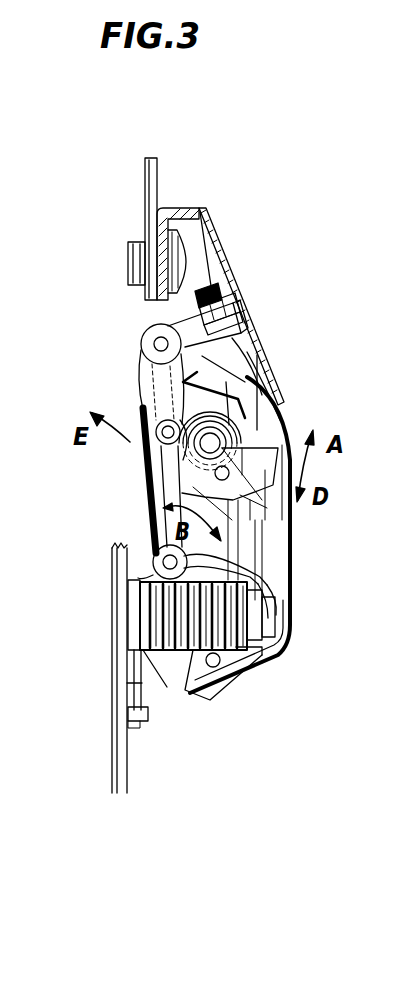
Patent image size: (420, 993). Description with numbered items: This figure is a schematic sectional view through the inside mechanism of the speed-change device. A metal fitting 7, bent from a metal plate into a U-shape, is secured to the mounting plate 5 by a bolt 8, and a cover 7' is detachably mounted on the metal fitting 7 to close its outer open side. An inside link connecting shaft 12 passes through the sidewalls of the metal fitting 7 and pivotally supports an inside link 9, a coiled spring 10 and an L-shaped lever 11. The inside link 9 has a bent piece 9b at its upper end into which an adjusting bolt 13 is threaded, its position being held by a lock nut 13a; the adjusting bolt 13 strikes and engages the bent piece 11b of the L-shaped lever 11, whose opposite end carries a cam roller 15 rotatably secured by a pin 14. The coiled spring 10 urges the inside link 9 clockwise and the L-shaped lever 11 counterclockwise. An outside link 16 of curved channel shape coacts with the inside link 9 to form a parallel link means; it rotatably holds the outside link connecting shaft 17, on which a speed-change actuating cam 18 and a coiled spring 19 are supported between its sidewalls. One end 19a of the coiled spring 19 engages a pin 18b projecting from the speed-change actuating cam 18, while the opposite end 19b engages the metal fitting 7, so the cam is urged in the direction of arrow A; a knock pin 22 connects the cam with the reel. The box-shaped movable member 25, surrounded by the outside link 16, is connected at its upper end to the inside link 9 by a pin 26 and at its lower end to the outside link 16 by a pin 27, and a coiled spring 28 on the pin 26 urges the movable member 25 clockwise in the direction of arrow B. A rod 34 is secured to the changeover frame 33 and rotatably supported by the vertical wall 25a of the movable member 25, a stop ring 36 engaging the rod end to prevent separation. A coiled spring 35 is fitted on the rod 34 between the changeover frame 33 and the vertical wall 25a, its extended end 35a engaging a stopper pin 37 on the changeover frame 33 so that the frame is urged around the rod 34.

The mounting plate 5 is at (148, 178).
The metal fitting 7 is at (184, 209).
The cover 7' is at (241, 282).
The bolt 8 is at (130, 262).
The inside link 9 is at (140, 467).
The bent piece 9b is at (236, 333).
The coiled spring 10 is at (155, 325).
The L-shaped lever 11 is at (148, 375).
The bent piece 11b is at (247, 352).
The inside link connecting shaft 12 is at (146, 336).
The adjusting bolt 13 is at (213, 286).
The lock nut 13a is at (226, 322).
The pin 14 is at (158, 422).
The cam roller 15 is at (157, 441).
The outside link 16 is at (288, 608).
The outside link connecting shaft 17 is at (300, 420).
The speed-change actuating cam 18 is at (193, 485).
The pin 18b is at (300, 425).
The coiled spring 19 is at (284, 410).
The spring end 19a is at (252, 488).
The spring end 19b is at (257, 380).
The knock pin 22 is at (252, 505).
The movable member 25 is at (250, 587).
The vertical wall 25a is at (285, 614).
The pin 26 is at (153, 563).
The pin 27 is at (215, 668).
The coiled spring 28 is at (157, 542).
The changeover frame 33 is at (114, 775).
The rod 34 is at (287, 640).
The coiled spring 35 is at (162, 652).
The spring end 35a is at (130, 683).
The stop ring 36 is at (284, 652).
The stopper pin 37 is at (144, 721).